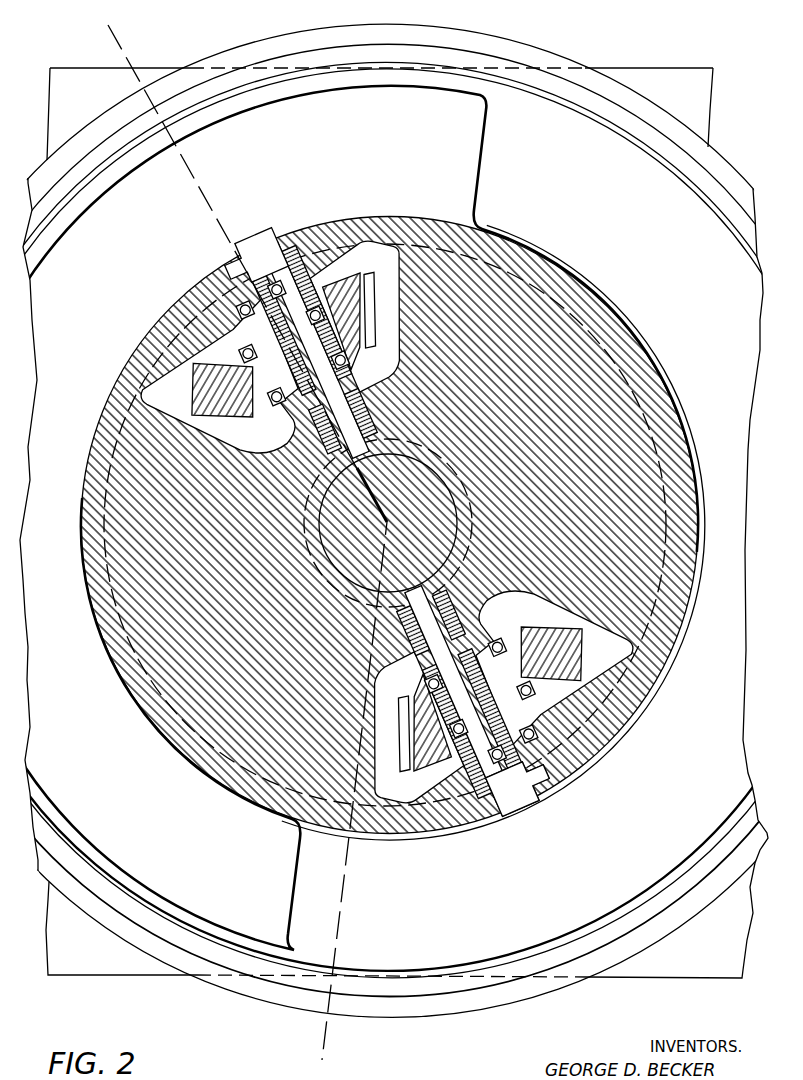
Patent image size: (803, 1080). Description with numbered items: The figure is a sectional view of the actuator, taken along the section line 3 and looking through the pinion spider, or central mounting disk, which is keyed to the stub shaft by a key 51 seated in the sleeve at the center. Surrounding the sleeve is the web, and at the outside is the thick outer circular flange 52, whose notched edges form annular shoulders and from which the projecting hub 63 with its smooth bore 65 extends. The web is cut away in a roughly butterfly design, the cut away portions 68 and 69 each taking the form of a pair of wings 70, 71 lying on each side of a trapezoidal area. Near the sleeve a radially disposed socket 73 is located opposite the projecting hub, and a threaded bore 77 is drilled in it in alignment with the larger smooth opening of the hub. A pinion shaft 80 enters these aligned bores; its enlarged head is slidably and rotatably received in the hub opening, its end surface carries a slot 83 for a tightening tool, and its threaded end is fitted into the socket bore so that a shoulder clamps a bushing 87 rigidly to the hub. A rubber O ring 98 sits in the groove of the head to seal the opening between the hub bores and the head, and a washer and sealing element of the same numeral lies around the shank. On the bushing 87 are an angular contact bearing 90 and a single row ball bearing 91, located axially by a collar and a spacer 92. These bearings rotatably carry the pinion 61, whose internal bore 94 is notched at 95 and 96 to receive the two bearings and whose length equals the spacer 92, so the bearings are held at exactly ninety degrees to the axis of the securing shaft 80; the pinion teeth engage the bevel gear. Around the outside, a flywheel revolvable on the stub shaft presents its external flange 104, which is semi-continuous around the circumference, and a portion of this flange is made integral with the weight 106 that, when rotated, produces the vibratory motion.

The section line 3- 3 is at (88, 46).
The key 51 is at (447, 481).
The outer circular flange 52 is at (337, 221).
The pinion 61 is at (563, 623).
The projecting hub 63 is at (477, 826).
The smooth bore 65 is at (563, 735).
The cut away portion 68 is at (383, 347).
The cut away portion 69 is at (397, 675).
The wing 70 is at (393, 284).
The wing 71 is at (598, 640).
The radially disposed socket 73 is at (493, 617).
The bore 77 is at (447, 593).
The pinion shaft 80 is at (494, 701).
The slot 83 is at (246, 283).
The bushing 87 is at (433, 640).
The angular contact bearing 90 is at (443, 773).
The single row ball bearing 91 is at (508, 610).
The spacer 92 is at (410, 713).
The internal bore 94 is at (250, 378).
The notch 95 is at (222, 307).
The notch 96 is at (288, 430).
The rubber O ring 98 is at (275, 282).
The external flange 104 is at (208, 118).
The weight 106 is at (318, 868).